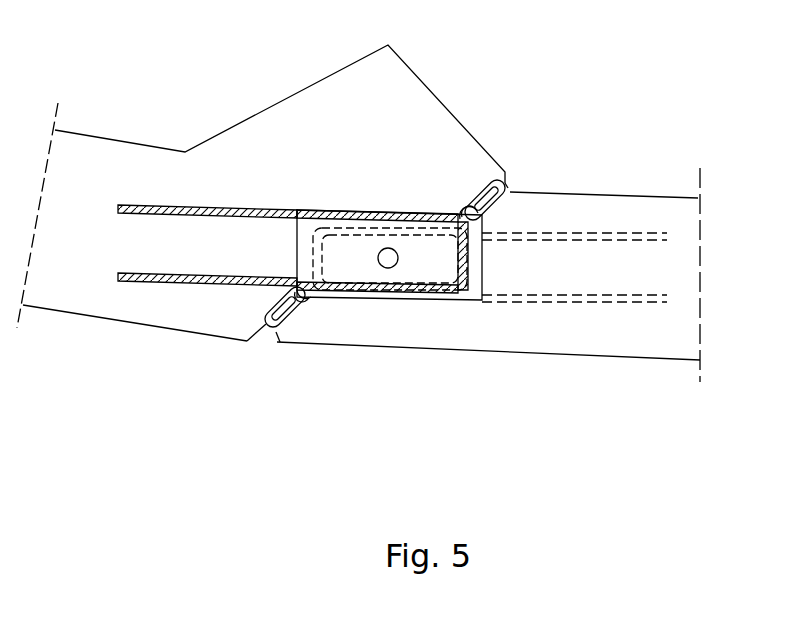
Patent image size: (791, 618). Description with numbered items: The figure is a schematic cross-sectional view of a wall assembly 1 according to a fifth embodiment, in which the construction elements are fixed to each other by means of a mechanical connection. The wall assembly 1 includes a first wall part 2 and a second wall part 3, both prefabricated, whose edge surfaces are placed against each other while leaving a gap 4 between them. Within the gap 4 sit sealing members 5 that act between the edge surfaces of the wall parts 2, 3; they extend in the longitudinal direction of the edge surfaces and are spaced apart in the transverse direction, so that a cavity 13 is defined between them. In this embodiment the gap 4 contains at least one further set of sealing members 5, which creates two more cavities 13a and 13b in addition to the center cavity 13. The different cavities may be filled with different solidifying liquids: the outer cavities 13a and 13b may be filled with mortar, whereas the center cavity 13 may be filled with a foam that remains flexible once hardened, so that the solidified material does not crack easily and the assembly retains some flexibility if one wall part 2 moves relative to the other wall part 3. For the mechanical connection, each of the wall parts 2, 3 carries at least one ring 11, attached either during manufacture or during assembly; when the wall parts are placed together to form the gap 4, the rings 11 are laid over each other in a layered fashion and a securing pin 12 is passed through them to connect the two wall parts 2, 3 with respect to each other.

The wall assembly 1 is at (555, 416).
The first wall part 2 is at (455, 332).
The second wall part 3 is at (230, 155).
The gap 4 is at (267, 325).
The sealing members 5 is at (295, 297).
The ring 11 is at (160, 278).
The securing pin 12 is at (388, 262).
The cavity 13 is at (362, 261).
The cavity 13a is at (293, 305).
The cavity 13b is at (498, 193).